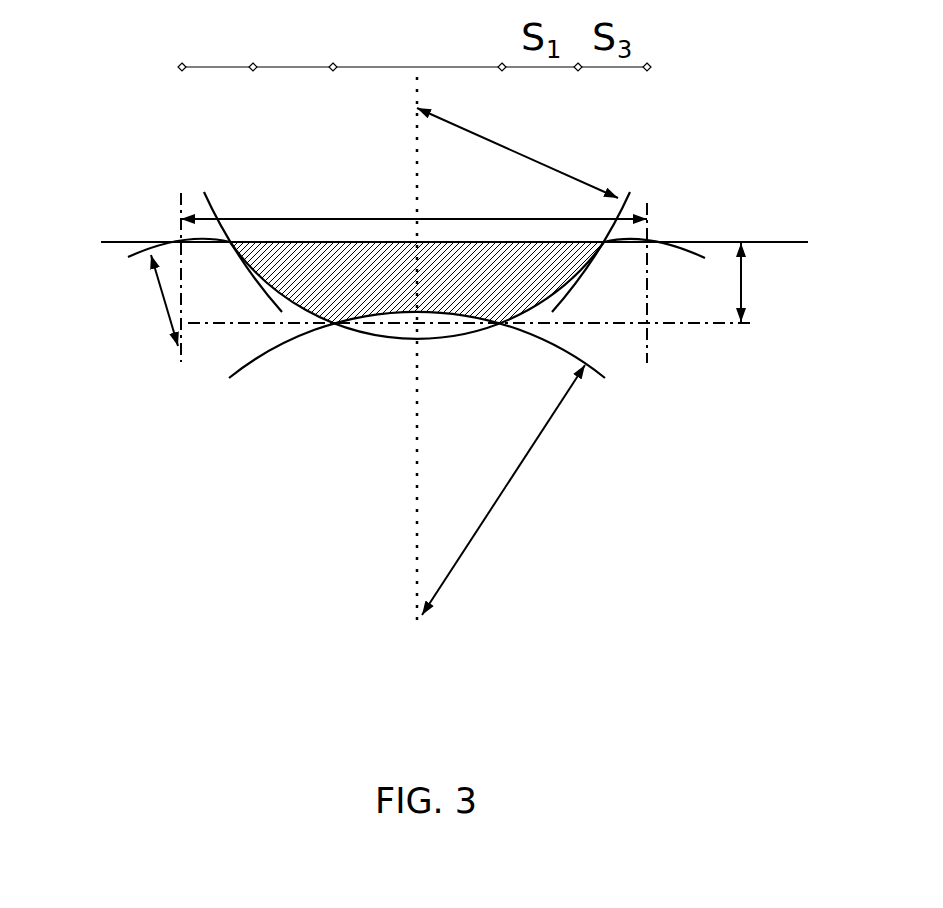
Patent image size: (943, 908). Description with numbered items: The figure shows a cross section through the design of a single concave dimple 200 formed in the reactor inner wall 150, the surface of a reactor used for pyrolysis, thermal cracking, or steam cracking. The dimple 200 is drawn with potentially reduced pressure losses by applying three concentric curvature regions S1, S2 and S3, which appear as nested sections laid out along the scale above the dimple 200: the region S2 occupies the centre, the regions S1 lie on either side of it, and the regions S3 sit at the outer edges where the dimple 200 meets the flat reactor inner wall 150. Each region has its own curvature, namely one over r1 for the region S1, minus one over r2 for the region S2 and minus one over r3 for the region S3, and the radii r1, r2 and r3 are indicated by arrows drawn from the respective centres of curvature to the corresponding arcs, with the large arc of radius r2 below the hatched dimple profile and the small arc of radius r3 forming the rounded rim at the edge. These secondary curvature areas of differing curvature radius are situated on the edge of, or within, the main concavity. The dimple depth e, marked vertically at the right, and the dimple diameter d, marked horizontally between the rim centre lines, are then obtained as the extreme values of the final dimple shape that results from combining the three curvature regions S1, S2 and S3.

The reactor inner wall 150 is at (102, 242).
The dimple 200 is at (627, 242).
The dimple diameter d is at (414, 197).
The dimple depth e is at (759, 282).
The curvature radius of region S1 r1 is at (517, 149).
The curvature radius of region S2 r2 is at (503, 490).
The curvature radius of region S3 r3 is at (148, 300).
The curvature region S1 is at (297, 39).
The curvature region S2 is at (421, 39).
The curvature region S3 is at (217, 39).